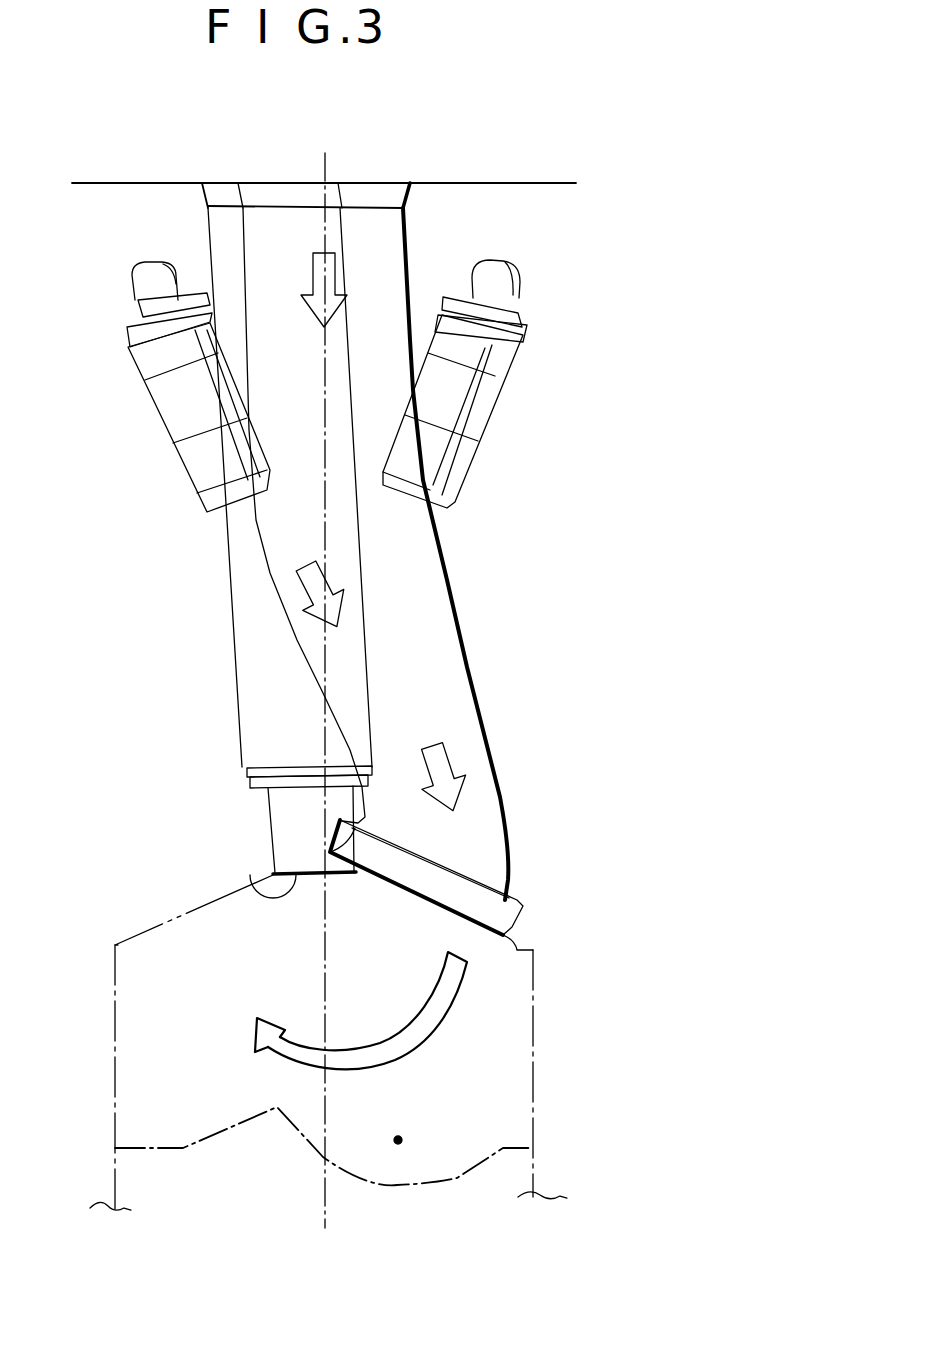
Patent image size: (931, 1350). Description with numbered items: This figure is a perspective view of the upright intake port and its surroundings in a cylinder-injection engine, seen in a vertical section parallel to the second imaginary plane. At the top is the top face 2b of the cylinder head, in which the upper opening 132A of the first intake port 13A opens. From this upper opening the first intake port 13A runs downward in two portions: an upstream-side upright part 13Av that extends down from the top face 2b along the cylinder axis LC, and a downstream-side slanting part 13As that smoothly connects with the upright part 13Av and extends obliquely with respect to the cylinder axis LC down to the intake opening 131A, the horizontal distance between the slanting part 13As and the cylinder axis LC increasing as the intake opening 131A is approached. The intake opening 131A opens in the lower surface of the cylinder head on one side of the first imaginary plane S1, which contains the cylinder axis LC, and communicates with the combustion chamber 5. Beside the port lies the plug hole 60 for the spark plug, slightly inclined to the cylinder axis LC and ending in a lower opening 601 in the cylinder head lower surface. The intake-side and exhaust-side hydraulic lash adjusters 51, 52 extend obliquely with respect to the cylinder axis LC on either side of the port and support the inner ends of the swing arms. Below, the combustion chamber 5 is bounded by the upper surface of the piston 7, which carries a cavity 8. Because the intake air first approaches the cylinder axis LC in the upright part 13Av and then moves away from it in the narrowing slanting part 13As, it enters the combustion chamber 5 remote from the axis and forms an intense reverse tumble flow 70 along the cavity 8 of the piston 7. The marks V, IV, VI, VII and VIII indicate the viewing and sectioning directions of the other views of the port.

The top face of the cylinder head 2b is at (493, 182).
The upper opening of the first intake port 132A is at (382, 193).
The upstream-side upright part 13Av is at (377, 240).
The first intake port 13A is at (449, 558).
The downstream-side slanting part 13As is at (478, 808).
The intake opening of the first intake port 131A is at (467, 890).
The plug hole 60 is at (248, 620).
The lower opening of the plug hole 601 is at (260, 877).
The exhaust-side hydraulic lash adjuster 52 is at (153, 362).
The intake-side hydraulic lash adjuster 51 is at (480, 387).
The combustion chamber 5 is at (262, 995).
The piston 7 is at (283, 1203).
The reverse tumble flow 70 is at (443, 997).
The cavity 8 is at (398, 1140).
The first imaginary plane S1 is at (325, 1202).
The cylinder axis LC is at (328, 175).
The view direction V is at (325, 118).
The view direction IV is at (622, 573).
The section line VI is at (130, 459).
The section line VII is at (518, 679).
The section line VIII is at (555, 719).